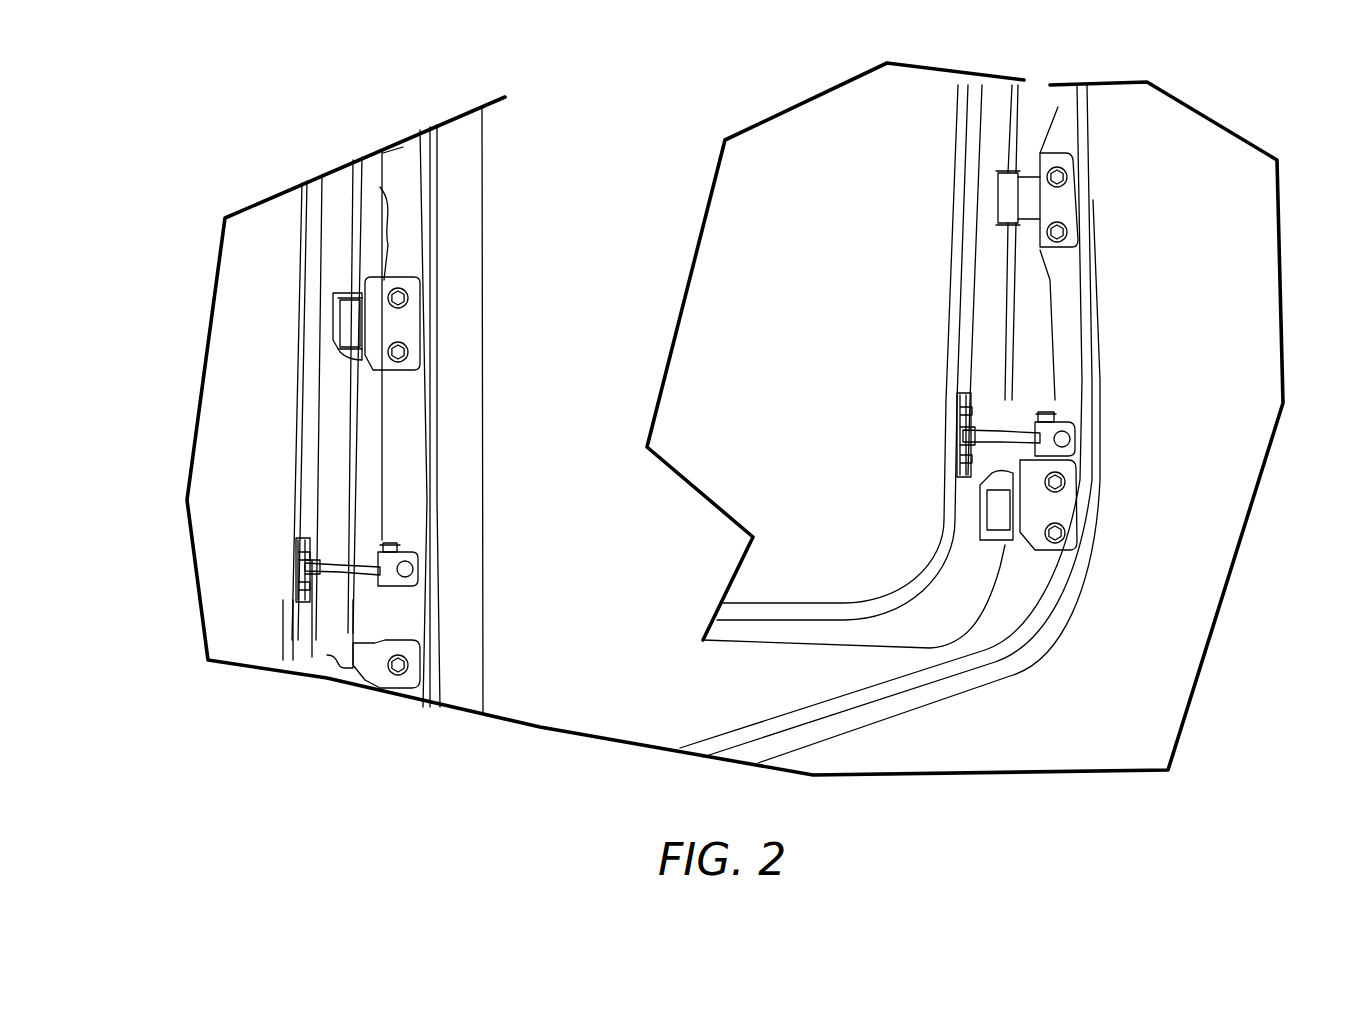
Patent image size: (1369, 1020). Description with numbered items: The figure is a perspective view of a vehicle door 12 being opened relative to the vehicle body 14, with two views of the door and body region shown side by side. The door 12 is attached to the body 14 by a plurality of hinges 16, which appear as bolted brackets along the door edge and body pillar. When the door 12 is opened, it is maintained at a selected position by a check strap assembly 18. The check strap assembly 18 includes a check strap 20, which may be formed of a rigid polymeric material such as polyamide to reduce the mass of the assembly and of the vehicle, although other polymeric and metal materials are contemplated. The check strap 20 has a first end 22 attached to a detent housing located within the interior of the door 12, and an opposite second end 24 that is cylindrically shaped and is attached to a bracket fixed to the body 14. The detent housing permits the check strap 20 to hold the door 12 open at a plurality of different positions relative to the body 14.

The door 12 is at (258, 361).
The body 14 is at (410, 468).
The hinge 16 is at (385, 317).
The check strap assembly 18 is at (322, 596).
The check strap 20 is at (368, 556).
The first end 22 is at (320, 564).
The second end 24 is at (393, 567).